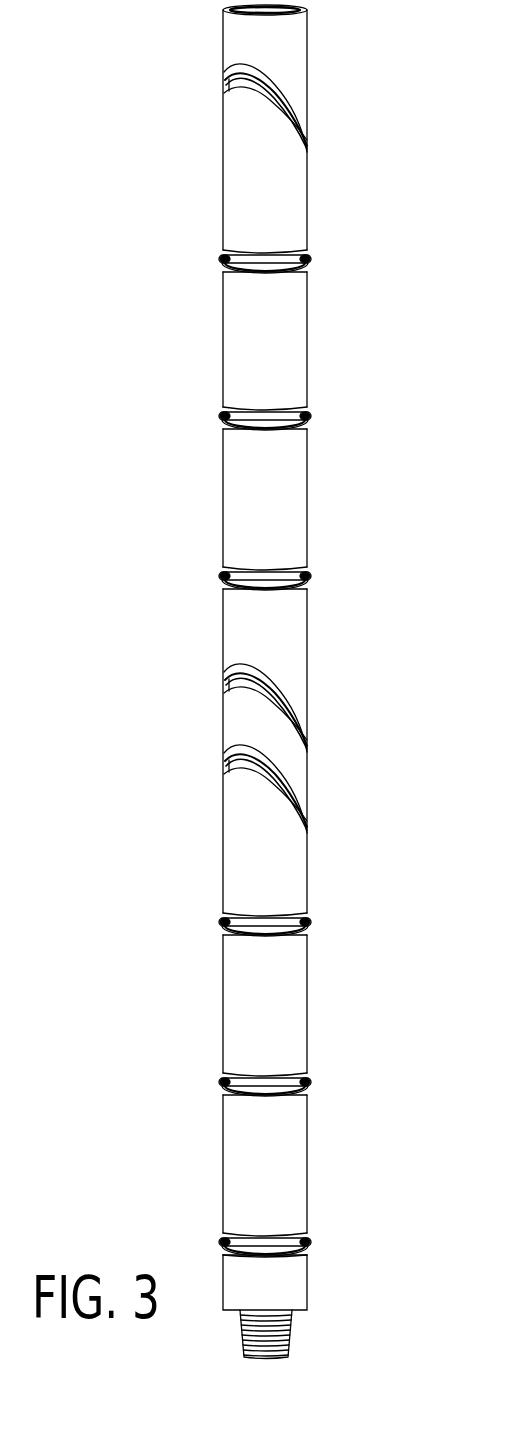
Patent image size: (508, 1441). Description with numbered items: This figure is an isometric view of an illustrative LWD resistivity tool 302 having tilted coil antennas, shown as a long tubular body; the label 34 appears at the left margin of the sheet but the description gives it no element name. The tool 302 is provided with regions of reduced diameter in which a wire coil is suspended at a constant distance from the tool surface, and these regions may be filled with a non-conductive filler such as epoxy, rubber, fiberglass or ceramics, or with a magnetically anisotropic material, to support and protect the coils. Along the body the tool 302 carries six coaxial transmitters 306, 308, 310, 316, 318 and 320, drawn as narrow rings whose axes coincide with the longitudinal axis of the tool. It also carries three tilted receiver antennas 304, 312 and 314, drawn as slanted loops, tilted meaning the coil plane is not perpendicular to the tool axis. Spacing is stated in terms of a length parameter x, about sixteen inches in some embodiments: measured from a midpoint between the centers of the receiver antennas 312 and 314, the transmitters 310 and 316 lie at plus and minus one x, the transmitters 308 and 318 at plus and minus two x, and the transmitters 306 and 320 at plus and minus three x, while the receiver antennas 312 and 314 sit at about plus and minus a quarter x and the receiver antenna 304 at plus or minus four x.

The downhole tool 34 is at (0, 645).
The LWD resistivity tool 302 is at (231, 33).
The tilted receiver antenna 304 is at (227, 82).
The coaxial transmitter 306 is at (222, 260).
The coaxial transmitter 308 is at (222, 417).
The coaxial transmitter 310 is at (222, 577).
The tilted receiver antenna 312 is at (227, 682).
The tilted receiver antenna 314 is at (227, 763).
The coaxial transmitter 316 is at (222, 923).
The coaxial transmitter 318 is at (222, 1083).
The coaxial transmitter 320 is at (222, 1243).